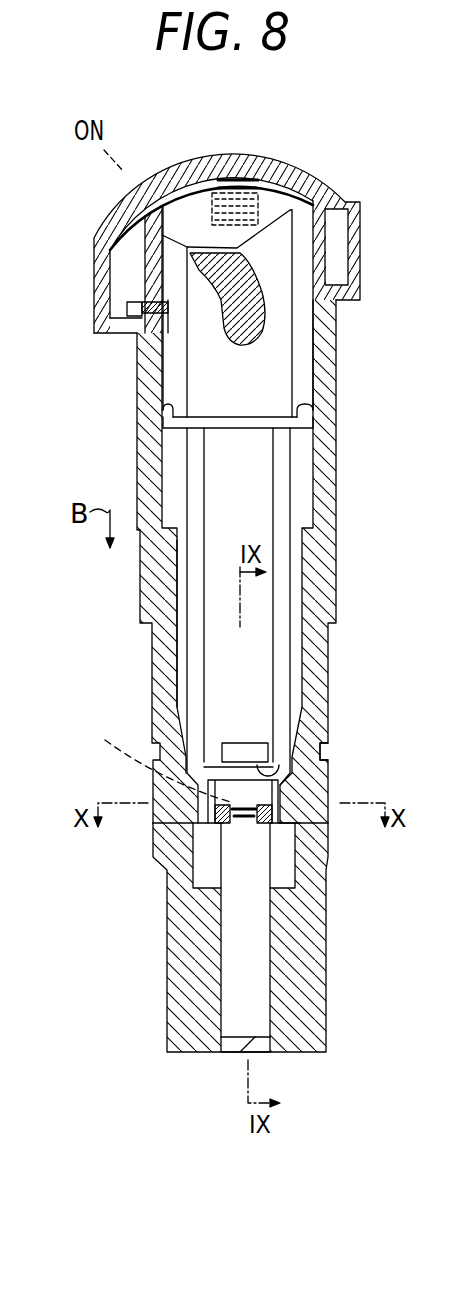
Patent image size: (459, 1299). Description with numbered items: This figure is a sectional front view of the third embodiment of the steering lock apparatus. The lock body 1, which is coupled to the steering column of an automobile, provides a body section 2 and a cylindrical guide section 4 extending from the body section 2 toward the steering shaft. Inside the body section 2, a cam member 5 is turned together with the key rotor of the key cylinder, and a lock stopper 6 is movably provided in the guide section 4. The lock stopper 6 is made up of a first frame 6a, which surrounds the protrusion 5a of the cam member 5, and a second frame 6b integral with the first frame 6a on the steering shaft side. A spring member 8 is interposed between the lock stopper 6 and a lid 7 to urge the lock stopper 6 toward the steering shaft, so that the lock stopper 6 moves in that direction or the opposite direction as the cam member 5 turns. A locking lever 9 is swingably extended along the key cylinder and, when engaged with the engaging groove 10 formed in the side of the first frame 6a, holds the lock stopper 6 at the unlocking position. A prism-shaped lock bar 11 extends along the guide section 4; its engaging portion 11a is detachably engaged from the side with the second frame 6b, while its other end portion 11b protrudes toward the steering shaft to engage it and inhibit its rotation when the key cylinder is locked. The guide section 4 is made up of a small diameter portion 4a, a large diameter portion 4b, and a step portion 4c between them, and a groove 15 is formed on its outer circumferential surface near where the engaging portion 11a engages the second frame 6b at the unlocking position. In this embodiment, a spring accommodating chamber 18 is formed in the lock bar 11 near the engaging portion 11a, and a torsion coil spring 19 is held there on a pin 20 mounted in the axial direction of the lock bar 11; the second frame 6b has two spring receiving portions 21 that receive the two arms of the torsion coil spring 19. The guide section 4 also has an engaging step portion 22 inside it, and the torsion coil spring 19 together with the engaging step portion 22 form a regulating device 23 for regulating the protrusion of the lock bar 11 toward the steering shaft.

The lock body 1 is at (366, 238).
The body section 2 is at (352, 278).
The guide section 4 is at (328, 655).
The small diameter portion 4a is at (226, 917).
The large diameter portion 4b is at (180, 690).
The step portion 4c is at (200, 878).
The cam member 5 is at (253, 318).
The protrusion 5a is at (187, 252).
The lock stopper 6 is at (292, 460).
The first frame 6a is at (307, 370).
The second frame 6b is at (280, 598).
The lid 7 is at (288, 166).
The spring member 8 is at (255, 183).
The locking lever 9 is at (127, 300).
The engaging groove 10 is at (138, 336).
The lock bar 11 is at (260, 955).
The engaging portion 11a is at (276, 760).
The other end portion 11b is at (263, 1052).
The groove 15 is at (325, 748).
The spring accommodating chamber 18 is at (330, 772).
The torsion coil spring 19 is at (252, 823).
The pin 20 is at (150, 759).
The spring receiving portions 21 is at (210, 813).
The engaging step portion 22 is at (183, 818).
The regulating device 23 is at (312, 827).